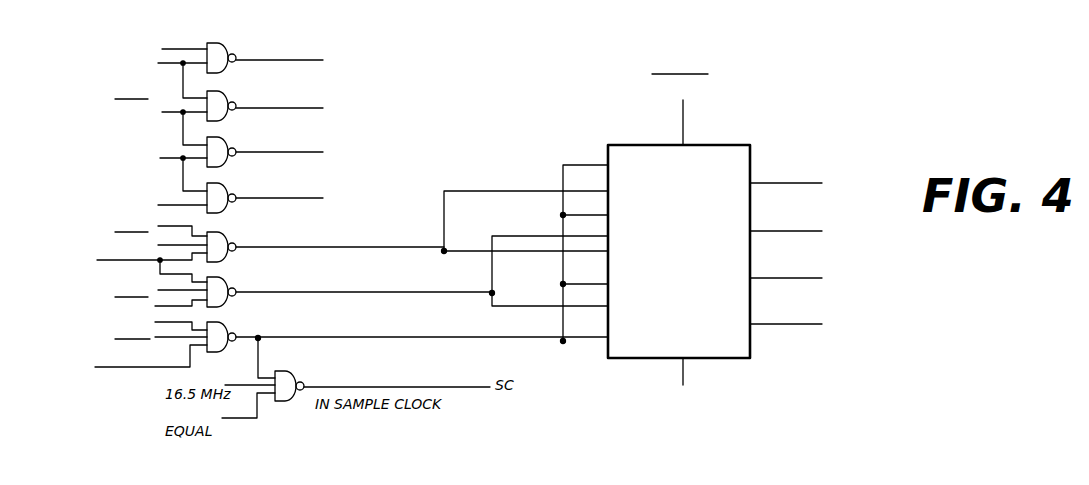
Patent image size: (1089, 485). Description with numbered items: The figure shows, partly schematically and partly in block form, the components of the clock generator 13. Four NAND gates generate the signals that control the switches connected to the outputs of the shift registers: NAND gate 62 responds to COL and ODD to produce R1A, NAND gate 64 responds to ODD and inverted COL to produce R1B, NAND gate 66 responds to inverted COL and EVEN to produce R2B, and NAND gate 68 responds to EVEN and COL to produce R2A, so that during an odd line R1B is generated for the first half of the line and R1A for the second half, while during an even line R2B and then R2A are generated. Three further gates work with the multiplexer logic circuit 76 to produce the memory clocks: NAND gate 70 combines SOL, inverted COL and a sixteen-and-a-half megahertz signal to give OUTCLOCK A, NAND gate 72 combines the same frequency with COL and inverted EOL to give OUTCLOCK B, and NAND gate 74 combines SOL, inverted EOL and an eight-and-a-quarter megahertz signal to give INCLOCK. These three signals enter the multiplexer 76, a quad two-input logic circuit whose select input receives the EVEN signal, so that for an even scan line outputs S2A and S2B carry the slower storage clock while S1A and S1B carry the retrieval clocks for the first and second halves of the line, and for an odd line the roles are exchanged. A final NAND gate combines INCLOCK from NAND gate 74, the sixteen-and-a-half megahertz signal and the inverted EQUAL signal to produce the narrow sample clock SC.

The clock generator 13 is at (486, 143).
The NAND gate 62 is at (218, 43).
The NAND gate 64 is at (220, 91).
The NAND gate 66 is at (220, 137).
The NAND gate 68 is at (220, 183).
The NAND gate 70 is at (222, 233).
The NAND gate 72 is at (222, 279).
The NAND gate 74 is at (222, 332).
The multiplexer logic circuit 76 is at (710, 145).